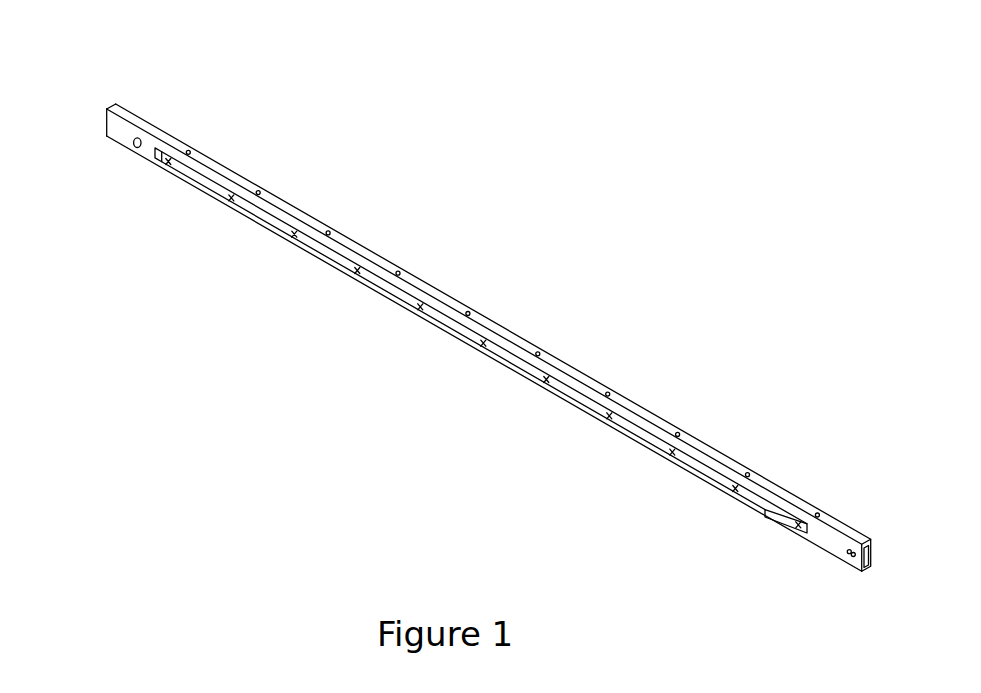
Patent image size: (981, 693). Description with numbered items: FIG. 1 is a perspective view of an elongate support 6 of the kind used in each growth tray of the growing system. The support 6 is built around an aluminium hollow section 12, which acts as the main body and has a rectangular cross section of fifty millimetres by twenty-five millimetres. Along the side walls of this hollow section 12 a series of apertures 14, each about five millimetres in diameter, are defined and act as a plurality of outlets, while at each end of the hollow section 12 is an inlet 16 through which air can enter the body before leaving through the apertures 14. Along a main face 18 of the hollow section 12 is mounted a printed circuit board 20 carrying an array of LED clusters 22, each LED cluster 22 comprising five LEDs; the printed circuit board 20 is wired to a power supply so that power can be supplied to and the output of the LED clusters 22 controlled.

The support 6 is at (758, 143).
The hollow section 12 is at (125, 110).
The apertures 14 is at (188, 150).
The inlet 16 is at (106, 119).
The main face 18 is at (143, 150).
The printed circuit board 20 is at (765, 510).
The LED cluster 22 is at (421, 310).